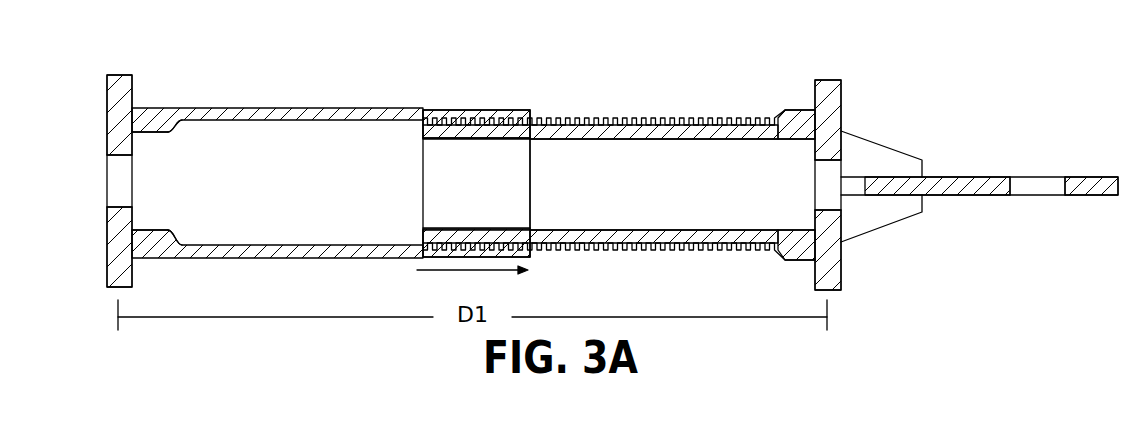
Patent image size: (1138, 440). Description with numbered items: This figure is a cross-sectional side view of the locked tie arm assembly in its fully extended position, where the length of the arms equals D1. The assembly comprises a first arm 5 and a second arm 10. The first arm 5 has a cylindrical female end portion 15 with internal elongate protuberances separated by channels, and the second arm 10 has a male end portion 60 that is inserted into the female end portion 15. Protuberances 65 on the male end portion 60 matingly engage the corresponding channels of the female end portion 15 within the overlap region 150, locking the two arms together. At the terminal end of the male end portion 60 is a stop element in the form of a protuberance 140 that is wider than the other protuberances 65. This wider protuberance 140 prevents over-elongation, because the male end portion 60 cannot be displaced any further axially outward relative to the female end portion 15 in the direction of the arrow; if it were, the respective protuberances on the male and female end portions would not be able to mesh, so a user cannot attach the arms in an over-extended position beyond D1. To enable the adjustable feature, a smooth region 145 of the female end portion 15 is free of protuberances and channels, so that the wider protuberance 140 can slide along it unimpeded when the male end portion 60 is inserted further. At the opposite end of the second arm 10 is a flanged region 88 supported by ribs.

The first arm 5 is at (265, 156).
The second arm 10 is at (770, 162).
The cylindrical female end portion 15 is at (500, 110).
The male end portion 60 is at (610, 121).
The protuberances 65 is at (628, 248).
The flanged region 88 is at (841, 108).
The protuberance 140 is at (425, 118).
The smooth region 145 is at (240, 127).
The overlap region 150 is at (443, 137).